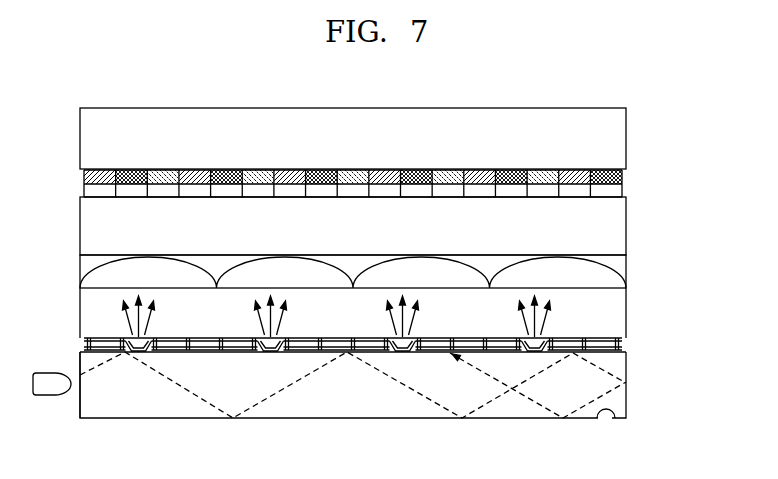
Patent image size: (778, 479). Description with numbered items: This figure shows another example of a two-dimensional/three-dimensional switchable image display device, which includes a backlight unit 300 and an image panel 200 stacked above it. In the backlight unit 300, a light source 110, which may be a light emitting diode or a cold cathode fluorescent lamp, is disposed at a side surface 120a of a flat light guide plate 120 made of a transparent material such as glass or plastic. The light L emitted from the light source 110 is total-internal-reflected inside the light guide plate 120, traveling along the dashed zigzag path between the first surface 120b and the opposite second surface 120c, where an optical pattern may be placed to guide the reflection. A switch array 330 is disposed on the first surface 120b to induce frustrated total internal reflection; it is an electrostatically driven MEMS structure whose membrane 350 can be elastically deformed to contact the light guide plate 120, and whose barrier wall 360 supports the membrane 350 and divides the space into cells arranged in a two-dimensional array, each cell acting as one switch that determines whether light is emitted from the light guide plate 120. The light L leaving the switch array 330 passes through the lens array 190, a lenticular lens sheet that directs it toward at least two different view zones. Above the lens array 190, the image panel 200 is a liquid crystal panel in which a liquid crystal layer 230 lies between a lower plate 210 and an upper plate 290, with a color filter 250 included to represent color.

The light source 110 is at (43, 396).
The light guide plate 120 is at (634, 391).
The side surface 120a is at (80, 375).
The first surface 120b is at (610, 353).
The second surface 120c is at (611, 418).
The lens array 190 is at (610, 276).
The image panel 200 is at (708, 130).
The lower plate 210 is at (626, 229).
The liquid crystal layer 230 is at (622, 196).
The color filter 250 is at (622, 177).
The upper plate 290 is at (626, 138).
The backlight unit 300 is at (714, 270).
The switch array 330 is at (634, 344).
The membrane 350 is at (127, 354).
The barrier wall 360 is at (218, 354).
The light L is at (488, 402).